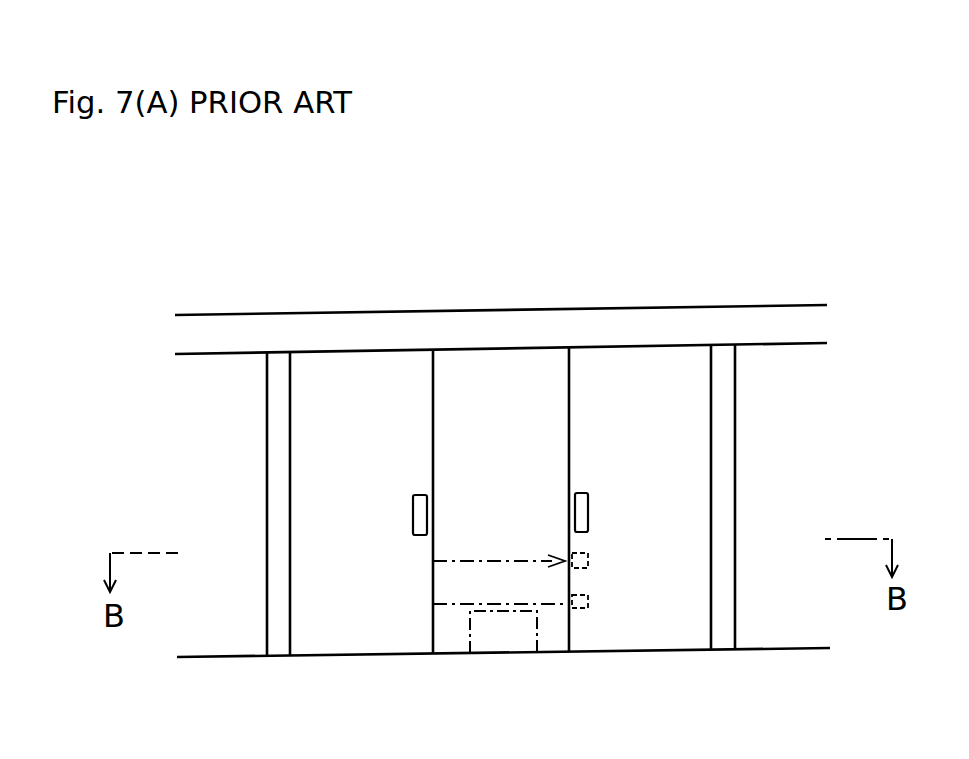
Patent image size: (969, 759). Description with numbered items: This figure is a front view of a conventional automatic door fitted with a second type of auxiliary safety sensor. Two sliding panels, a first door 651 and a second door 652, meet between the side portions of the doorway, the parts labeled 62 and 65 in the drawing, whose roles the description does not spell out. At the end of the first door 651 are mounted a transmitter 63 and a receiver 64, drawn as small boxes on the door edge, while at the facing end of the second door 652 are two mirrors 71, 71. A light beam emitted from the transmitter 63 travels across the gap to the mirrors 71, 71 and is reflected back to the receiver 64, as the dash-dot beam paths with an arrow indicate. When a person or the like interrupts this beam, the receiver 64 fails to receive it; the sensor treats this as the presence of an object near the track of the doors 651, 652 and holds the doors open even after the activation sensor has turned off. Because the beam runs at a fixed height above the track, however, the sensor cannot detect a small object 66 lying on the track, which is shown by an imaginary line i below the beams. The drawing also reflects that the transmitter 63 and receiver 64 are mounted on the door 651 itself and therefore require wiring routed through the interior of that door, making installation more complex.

The side wall 62 is at (267, 398).
The partition 65 is at (555, 218).
The first door 651 is at (622, 367).
The second door 652 is at (385, 383).
The receiver 64 is at (590, 561).
The transmitter 63 is at (590, 602).
The small object 66 is at (515, 640).
The mirrors 71 is at (433, 604).
The imaginary line i is at (470, 630).